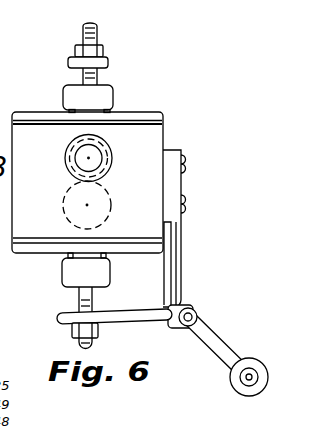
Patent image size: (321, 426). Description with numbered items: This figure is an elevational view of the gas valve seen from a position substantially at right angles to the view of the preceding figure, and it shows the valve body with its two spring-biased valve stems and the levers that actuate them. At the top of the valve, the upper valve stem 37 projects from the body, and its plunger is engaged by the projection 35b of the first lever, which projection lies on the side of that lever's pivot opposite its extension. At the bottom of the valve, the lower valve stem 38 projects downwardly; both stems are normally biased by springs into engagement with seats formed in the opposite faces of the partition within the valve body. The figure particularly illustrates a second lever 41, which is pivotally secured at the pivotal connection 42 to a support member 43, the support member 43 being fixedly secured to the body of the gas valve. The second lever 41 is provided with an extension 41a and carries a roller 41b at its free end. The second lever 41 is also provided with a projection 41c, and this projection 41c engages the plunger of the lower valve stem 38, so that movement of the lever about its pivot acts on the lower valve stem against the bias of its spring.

The projection 35b is at (72, 62).
The valve stem 37 is at (97, 31).
The valve stem 38 is at (99, 342).
The second lever 41 is at (220, 326).
The extension 41a is at (244, 366).
The roller 41b is at (246, 386).
The projection 41c is at (60, 315).
The pivotal connection 42 is at (192, 313).
The support member 43 is at (172, 262).